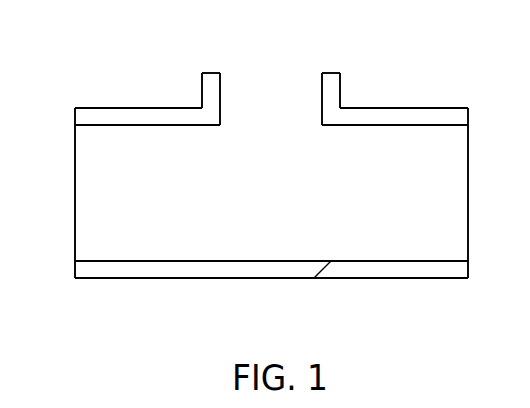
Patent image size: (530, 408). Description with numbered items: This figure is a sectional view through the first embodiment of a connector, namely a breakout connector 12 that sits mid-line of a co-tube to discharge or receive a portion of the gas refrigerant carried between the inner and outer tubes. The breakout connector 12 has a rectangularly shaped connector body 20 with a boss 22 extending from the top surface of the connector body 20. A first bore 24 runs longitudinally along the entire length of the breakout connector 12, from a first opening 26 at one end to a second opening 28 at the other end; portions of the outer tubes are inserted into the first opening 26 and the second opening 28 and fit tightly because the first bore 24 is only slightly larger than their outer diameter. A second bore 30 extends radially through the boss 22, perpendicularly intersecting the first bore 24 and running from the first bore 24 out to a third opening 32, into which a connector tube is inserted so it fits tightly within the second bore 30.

The breakout connector 12 is at (265, 204).
The connector body 20 is at (408, 108).
The boss 22 is at (202, 93).
The first bore 24 is at (271, 193).
The first opening 26 is at (75, 198).
The second opening 28 is at (468, 182).
The second bore 30 is at (271, 99).
The third opening 32 is at (262, 73).